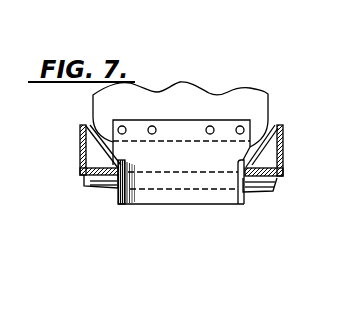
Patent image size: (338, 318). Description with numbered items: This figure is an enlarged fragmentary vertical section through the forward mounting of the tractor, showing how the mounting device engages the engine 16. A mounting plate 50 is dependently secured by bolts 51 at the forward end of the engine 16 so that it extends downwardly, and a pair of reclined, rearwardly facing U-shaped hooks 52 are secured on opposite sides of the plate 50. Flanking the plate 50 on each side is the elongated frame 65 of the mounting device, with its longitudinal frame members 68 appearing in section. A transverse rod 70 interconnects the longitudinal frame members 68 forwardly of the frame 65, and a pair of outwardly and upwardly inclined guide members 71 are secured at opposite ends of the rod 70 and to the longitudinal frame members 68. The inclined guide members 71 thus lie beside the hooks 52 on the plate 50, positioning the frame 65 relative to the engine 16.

The engine 16 is at (185, 95).
The mounting plate 50 is at (181, 166).
The bolts 51 is at (236, 127).
The U-shaped hooks 52 is at (120, 203).
The elongated frame 65 is at (180, 168).
The longitudinal frame members 68 is at (80, 172).
The transverse rod 70 is at (110, 184).
The guide members 71 is at (100, 151).